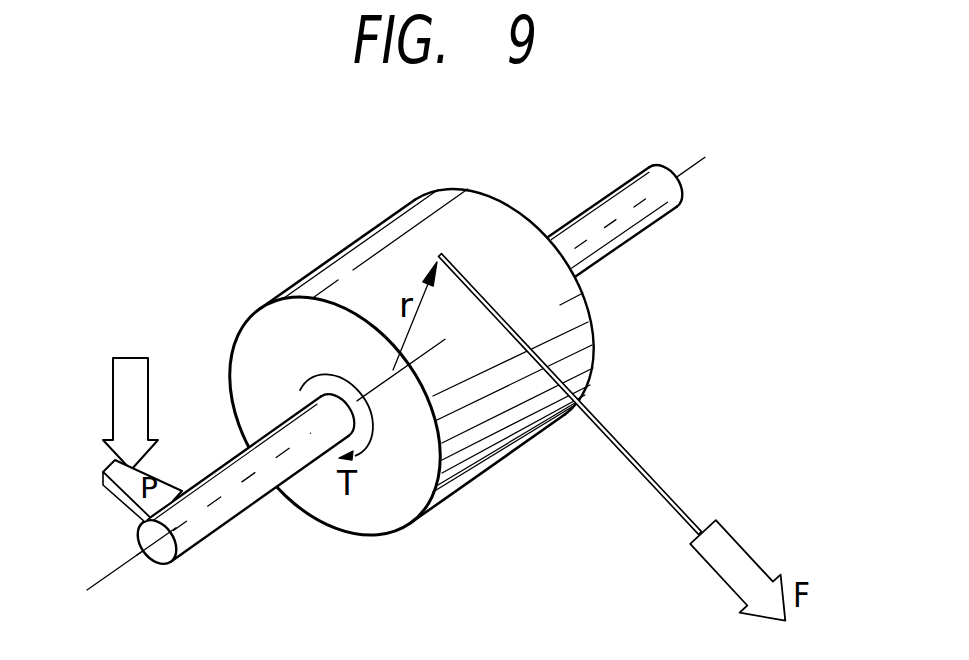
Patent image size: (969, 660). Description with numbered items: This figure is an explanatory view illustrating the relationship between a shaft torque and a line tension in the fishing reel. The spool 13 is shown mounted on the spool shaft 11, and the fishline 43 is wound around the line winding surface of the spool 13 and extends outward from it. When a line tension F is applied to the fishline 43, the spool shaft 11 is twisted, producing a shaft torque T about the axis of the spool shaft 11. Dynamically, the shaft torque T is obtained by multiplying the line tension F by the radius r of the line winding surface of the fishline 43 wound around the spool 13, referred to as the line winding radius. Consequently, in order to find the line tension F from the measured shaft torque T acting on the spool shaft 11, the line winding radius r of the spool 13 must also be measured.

The spool shaft 11 is at (598, 210).
The spool 13 is at (415, 212).
The fishline 43 is at (618, 433).